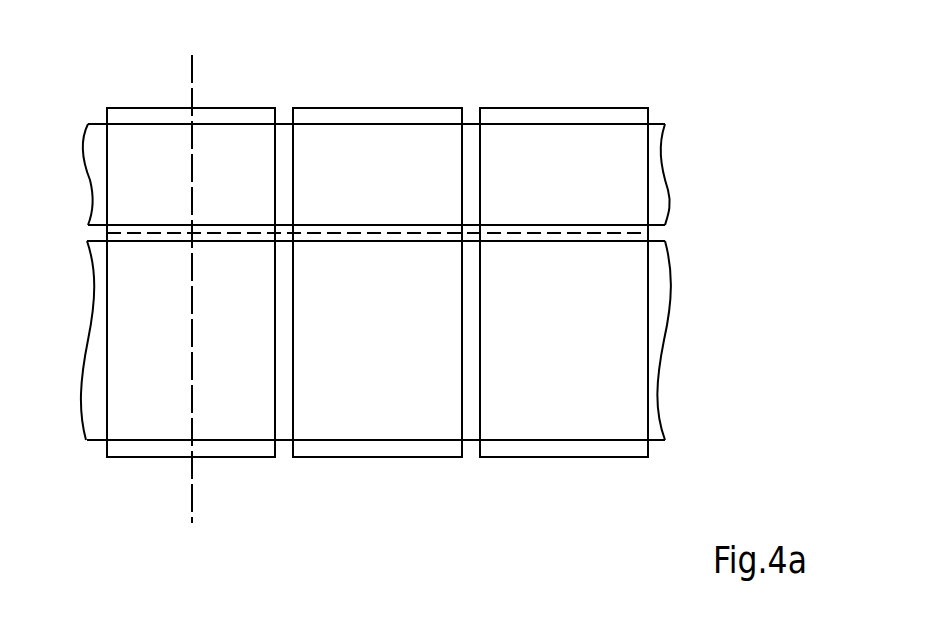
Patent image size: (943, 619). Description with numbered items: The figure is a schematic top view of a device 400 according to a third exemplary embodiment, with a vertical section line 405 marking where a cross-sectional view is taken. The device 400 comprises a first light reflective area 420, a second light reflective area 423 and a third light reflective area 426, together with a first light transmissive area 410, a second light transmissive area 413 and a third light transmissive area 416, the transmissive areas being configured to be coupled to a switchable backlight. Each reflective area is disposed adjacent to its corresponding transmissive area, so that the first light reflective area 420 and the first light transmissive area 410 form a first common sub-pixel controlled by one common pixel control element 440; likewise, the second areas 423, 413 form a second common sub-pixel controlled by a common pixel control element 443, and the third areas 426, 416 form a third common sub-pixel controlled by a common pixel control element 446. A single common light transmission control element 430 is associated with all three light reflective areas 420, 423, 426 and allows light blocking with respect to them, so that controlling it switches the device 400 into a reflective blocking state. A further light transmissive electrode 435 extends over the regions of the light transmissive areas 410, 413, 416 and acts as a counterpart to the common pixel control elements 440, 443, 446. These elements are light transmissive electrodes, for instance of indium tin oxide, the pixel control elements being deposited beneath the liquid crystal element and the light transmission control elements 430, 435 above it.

The device 400 is at (696, 83).
The line 405 is at (192, 306).
The first light transmissive area 410 is at (143, 114).
The second light transmissive area 413 is at (328, 114).
The third light transmissive area 416 is at (515, 114).
The first light reflective area 420 is at (105, 451).
The second light reflective area 423 is at (329, 449).
The third light reflective area 426 is at (513, 449).
The common light transmission control element 430 is at (659, 335).
The further light transmissive electrode 435 is at (657, 178).
The common pixel control element 440 is at (140, 458).
The common pixel control element 443 is at (413, 458).
The common pixel control element 446 is at (597, 458).